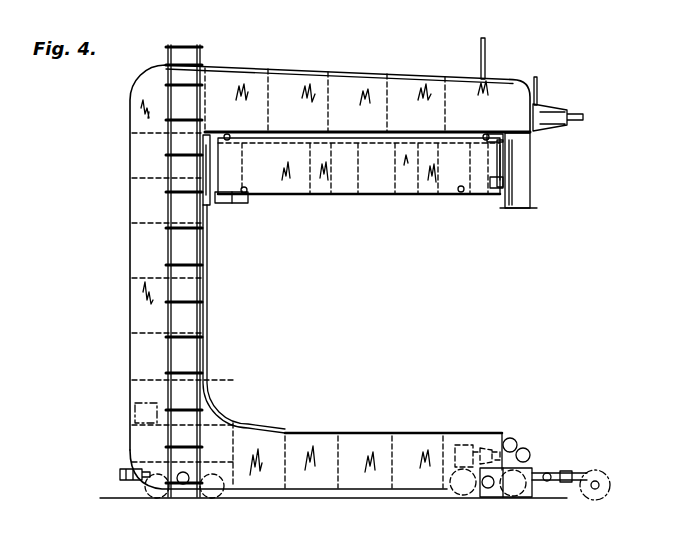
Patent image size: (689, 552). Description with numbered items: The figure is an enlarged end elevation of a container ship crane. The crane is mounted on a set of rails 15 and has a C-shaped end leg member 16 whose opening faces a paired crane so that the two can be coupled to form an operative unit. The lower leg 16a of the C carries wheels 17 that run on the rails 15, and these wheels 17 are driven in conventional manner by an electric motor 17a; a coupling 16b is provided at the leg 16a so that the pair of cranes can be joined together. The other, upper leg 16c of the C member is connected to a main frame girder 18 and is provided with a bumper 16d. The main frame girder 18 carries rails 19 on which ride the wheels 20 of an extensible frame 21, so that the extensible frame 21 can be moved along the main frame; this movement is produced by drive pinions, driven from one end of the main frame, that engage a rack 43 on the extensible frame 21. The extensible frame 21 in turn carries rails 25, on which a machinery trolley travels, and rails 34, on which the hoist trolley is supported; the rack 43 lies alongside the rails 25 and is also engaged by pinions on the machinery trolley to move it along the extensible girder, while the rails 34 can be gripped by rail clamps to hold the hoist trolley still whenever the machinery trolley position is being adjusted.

The rails 15 is at (118, 477).
The C-shaped end leg member 16 is at (128, 337).
The leg 16a is at (357, 433).
The coupling 16b is at (548, 472).
The leg 16c is at (393, 76).
The bumper 16d is at (553, 107).
The wheels 17 is at (208, 498).
The electric motor 17a is at (467, 445).
The main frame girder 18 is at (527, 188).
The rails 19 is at (214, 185).
The wheels 20 is at (212, 158).
The extensible frame 21 is at (380, 175).
The rails 25 is at (229, 137).
The rails 34 is at (247, 189).
The rack 43 is at (500, 138).